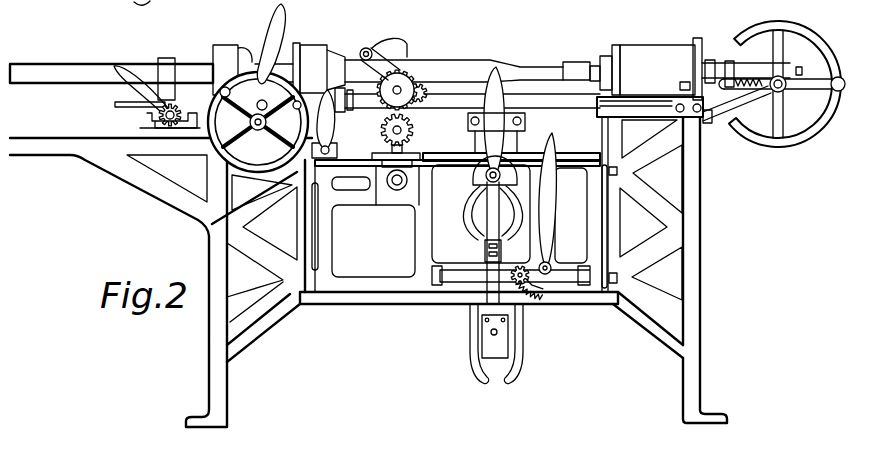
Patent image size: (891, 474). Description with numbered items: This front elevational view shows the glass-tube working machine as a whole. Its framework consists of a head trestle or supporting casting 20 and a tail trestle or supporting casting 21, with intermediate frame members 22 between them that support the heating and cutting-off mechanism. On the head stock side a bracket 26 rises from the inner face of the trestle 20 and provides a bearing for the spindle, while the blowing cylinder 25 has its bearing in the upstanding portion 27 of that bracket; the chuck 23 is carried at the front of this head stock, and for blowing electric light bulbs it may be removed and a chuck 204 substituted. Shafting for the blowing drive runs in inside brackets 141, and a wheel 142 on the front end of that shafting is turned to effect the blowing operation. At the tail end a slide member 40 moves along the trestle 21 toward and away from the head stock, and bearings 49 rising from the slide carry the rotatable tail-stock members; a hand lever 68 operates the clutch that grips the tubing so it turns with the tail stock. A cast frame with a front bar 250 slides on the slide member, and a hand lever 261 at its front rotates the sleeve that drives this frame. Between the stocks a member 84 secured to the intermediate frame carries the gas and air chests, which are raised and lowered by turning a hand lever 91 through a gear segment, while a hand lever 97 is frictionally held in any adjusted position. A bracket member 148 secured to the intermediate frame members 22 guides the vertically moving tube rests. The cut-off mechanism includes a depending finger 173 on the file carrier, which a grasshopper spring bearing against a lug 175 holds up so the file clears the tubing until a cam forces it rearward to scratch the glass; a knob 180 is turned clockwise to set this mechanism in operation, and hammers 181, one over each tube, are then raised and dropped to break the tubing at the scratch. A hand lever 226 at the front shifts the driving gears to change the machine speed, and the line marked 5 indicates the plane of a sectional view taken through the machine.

The section line / column 5 is at (172, 160).
The head trestle 20 is at (695, 174).
The tail trestle 21 is at (222, 231).
The intermediate frame members 22 is at (426, 229).
The chuck 23 is at (578, 63).
The blowing cylinder 25 is at (657, 70).
The bracket 26 is at (606, 56).
The upstanding portion 27 is at (701, 40).
The slide member 40 is at (148, 130).
The bearings 49 is at (312, 50).
The hand lever 68 is at (284, 32).
The member 84 is at (484, 249).
The hand lever 91 is at (552, 149).
The hand lever 97 is at (502, 92).
The inside brackets 141 is at (722, 111).
The wheel 142 is at (830, 49).
The bracket member 148 is at (409, 148).
The depending finger 173 is at (521, 346).
The lug 175 is at (472, 344).
The knob 180 is at (403, 82).
The hammers 181 is at (406, 53).
The chuck 204 is at (386, 196).
The hand lever 226 is at (326, 128).
The front bar 250 is at (152, 119).
The hand lever 261 is at (136, 88).